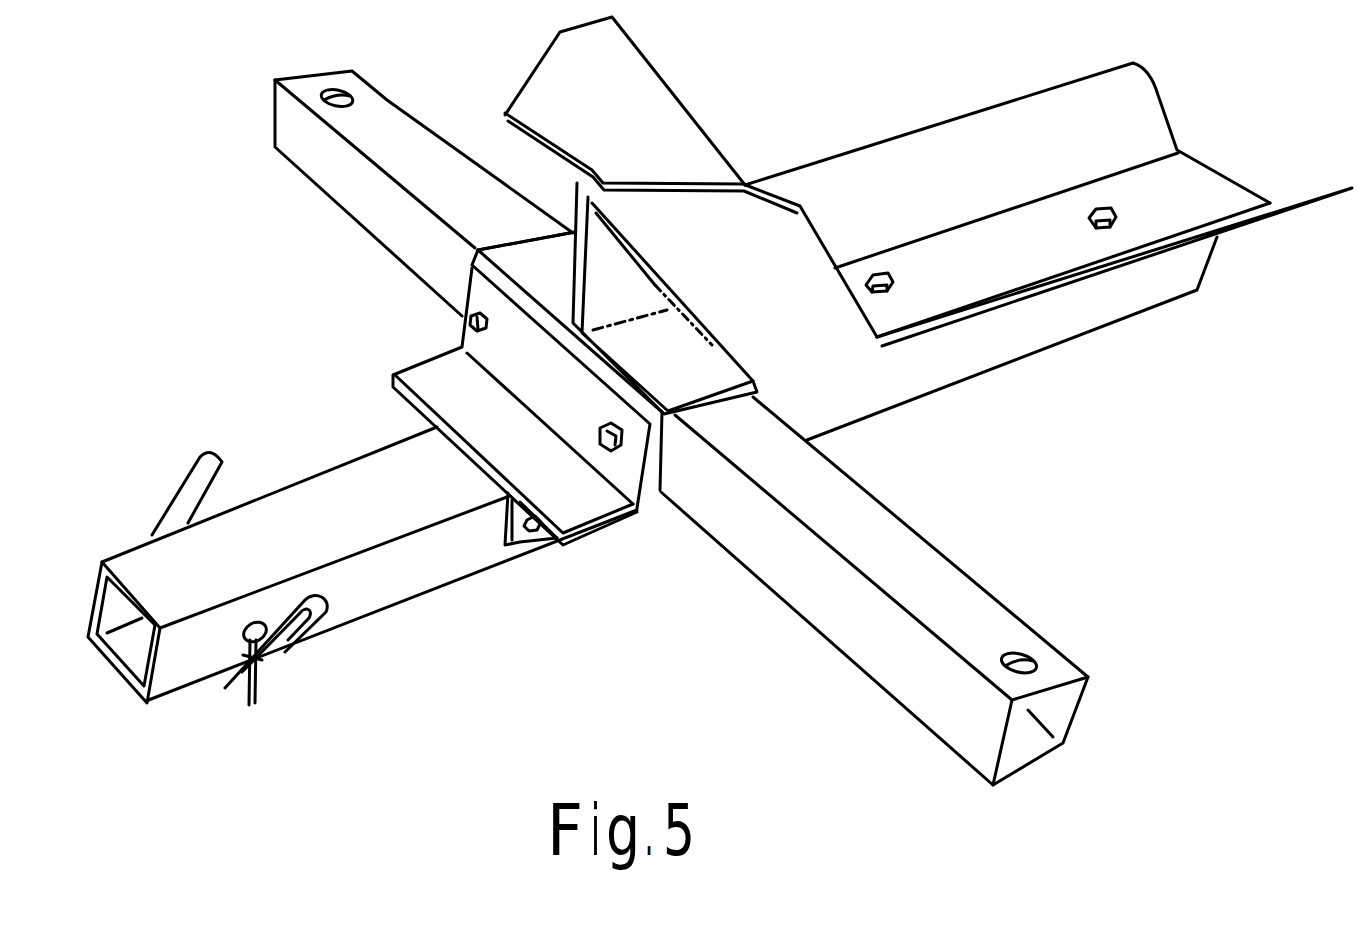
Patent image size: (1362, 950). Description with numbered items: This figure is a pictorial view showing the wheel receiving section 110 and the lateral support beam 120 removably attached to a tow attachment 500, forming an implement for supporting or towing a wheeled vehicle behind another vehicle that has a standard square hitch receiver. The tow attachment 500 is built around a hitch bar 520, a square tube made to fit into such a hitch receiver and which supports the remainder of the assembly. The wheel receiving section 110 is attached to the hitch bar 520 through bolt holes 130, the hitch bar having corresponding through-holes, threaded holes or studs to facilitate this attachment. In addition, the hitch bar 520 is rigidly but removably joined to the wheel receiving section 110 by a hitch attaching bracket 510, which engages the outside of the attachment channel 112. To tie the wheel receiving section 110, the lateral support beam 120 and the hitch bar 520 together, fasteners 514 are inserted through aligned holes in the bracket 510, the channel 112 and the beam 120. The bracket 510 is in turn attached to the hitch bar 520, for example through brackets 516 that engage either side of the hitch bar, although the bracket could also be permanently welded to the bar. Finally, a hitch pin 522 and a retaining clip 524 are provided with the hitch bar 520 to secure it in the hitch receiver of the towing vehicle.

The wheel receiving section 110 is at (805, 128).
The attachment channel 112 is at (493, 247).
The lateral support beam 120 is at (1010, 610).
The bolt holes 130 is at (893, 281).
The tow attachment 500 is at (474, 626).
The hitch attaching bracket 510 is at (610, 520).
The fasteners 514 is at (470, 322).
The brackets 516 is at (537, 541).
The hitch bar 520 is at (325, 476).
The hitch pin 522 is at (187, 464).
The retaining clip 524 is at (262, 698).